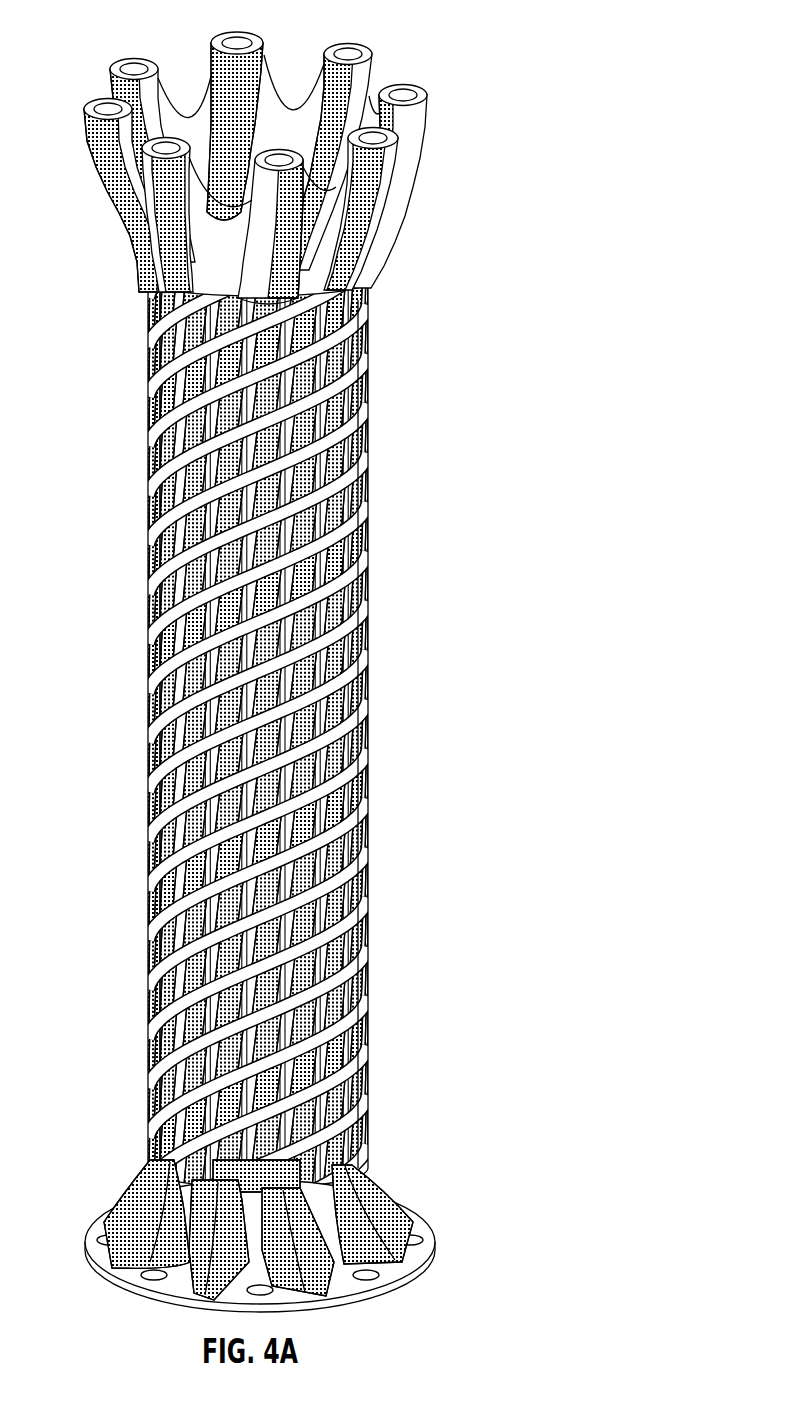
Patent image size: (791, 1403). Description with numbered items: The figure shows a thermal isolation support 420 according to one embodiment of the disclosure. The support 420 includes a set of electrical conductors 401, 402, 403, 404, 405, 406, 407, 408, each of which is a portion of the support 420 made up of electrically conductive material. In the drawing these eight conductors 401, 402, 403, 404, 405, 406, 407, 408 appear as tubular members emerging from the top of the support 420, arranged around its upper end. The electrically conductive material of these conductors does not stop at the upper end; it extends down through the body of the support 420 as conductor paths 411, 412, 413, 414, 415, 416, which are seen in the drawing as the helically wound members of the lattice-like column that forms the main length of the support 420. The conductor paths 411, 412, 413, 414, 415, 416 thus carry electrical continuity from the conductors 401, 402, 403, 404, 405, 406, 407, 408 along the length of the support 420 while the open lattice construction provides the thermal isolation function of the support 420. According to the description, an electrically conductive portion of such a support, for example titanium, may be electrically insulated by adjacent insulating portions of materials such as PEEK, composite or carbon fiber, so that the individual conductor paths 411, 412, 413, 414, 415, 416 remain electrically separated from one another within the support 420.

The electrical conductor 401 is at (90, 103).
The electrical conductor 402 is at (142, 151).
The electrical conductor 403 is at (304, 166).
The electrical conductor 404 is at (394, 141).
The electrical conductor 405 is at (404, 85).
The electrical conductor 406 is at (346, 48).
The electrical conductor 407 is at (234, 33).
The electrical conductor 408 is at (120, 61).
The conductor path 411 is at (353, 290).
The conductor path 412 is at (257, 375).
The conductor path 413 is at (258, 396).
The conductor path 414 is at (257, 474).
The conductor path 415 is at (257, 523).
The conductor path 416 is at (258, 594).
The thermal isolation support 420 is at (238, 718).